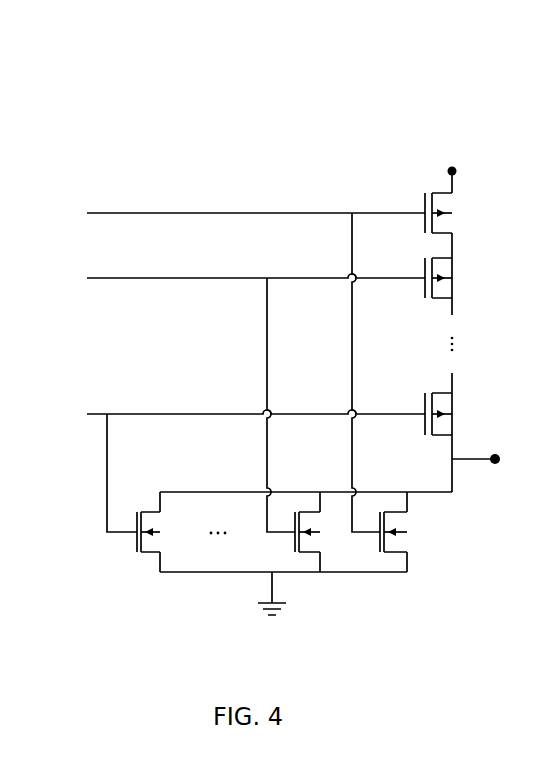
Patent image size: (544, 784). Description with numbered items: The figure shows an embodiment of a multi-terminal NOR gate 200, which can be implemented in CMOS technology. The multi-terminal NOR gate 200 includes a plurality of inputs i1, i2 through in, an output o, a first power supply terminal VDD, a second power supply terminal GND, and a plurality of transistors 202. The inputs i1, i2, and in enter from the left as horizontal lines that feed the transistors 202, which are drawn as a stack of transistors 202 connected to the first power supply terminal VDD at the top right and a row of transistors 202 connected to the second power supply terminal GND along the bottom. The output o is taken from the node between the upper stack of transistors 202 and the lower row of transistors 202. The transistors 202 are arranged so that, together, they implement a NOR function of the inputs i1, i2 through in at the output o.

The multi-terminal NOR gate 200 is at (123, 79).
The transistors 202 is at (423, 202).
The first input i1 is at (242, 214).
The second input i2 is at (242, 397).
The n-th input in is at (241, 465).
The first power supply terminal VDD is at (468, 163).
The output o is at (476, 457).
The second power supply terminal GND is at (270, 609).